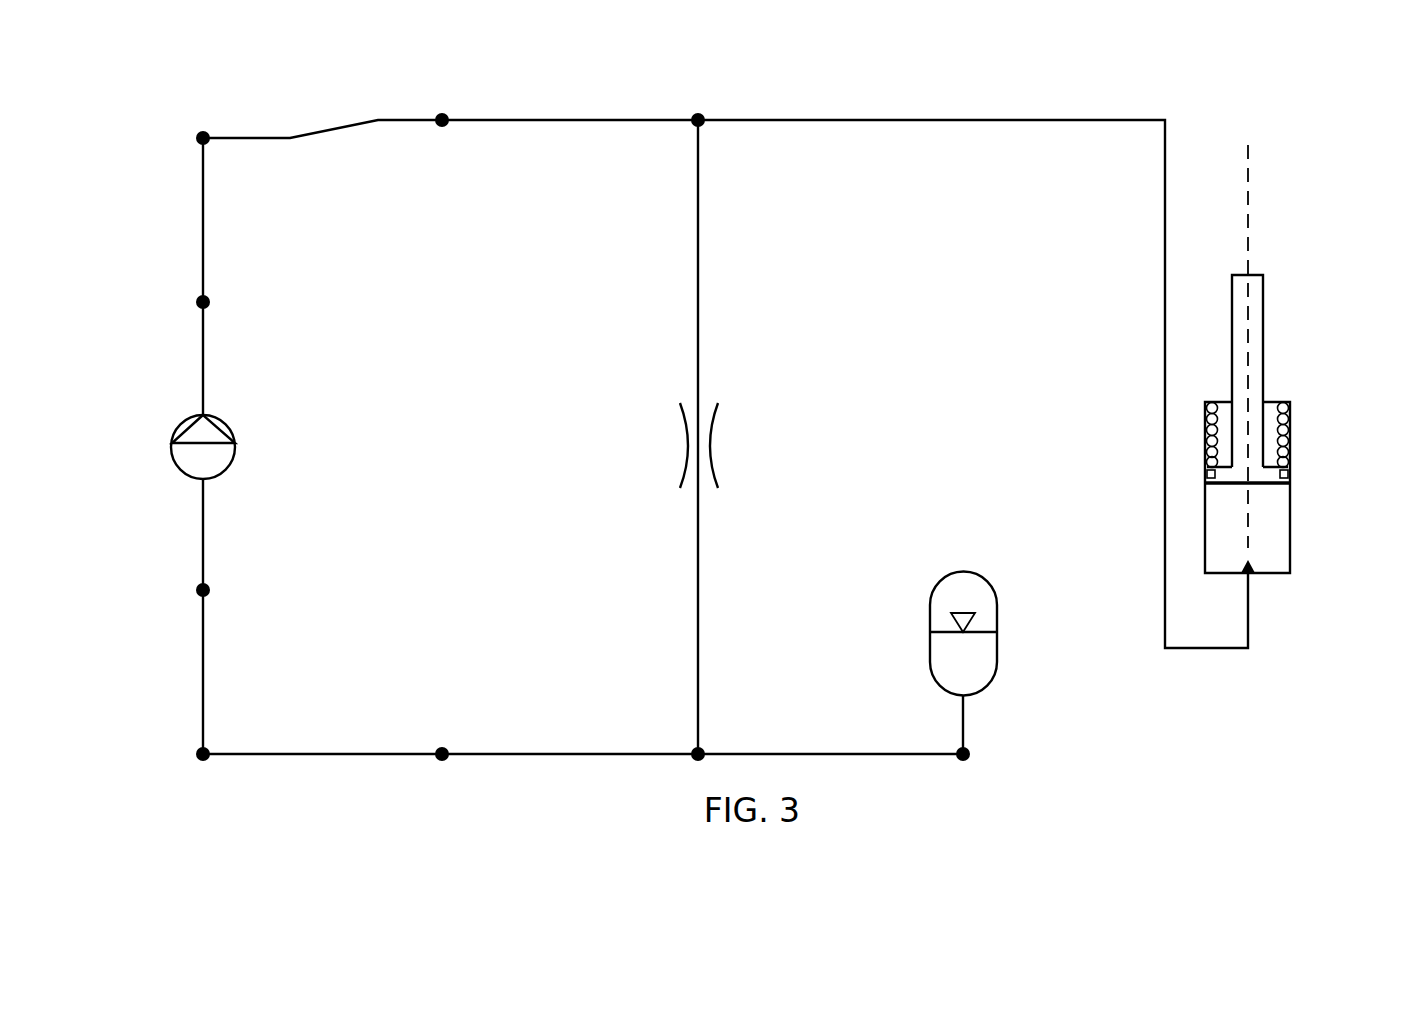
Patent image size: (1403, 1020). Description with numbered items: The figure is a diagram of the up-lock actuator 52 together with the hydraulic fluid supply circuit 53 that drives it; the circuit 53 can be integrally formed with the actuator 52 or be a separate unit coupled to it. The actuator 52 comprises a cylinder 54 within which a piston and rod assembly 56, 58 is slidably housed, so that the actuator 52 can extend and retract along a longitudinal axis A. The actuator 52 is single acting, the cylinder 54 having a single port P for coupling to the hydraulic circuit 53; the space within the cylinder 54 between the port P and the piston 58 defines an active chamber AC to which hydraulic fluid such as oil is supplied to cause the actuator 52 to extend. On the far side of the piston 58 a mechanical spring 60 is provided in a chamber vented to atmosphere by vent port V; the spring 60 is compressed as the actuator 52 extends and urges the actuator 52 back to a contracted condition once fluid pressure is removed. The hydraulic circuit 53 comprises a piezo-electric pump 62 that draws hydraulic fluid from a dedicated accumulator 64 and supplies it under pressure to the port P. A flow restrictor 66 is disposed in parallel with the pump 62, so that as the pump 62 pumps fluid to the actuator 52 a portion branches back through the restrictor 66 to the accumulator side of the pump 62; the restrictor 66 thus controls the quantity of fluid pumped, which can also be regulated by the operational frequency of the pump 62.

The up-lock actuator 52 is at (1294, 359).
The hydraulic fluid supply circuit 53 is at (1071, 110).
The cylinder 54 is at (1292, 522).
The rod 56 is at (1267, 311).
The piston 58 is at (1265, 485).
The spring 60 is at (1280, 400).
The piezo-electric pump 62 is at (185, 460).
The accumulator 64 is at (998, 645).
The flow restrictor 66 is at (713, 459).